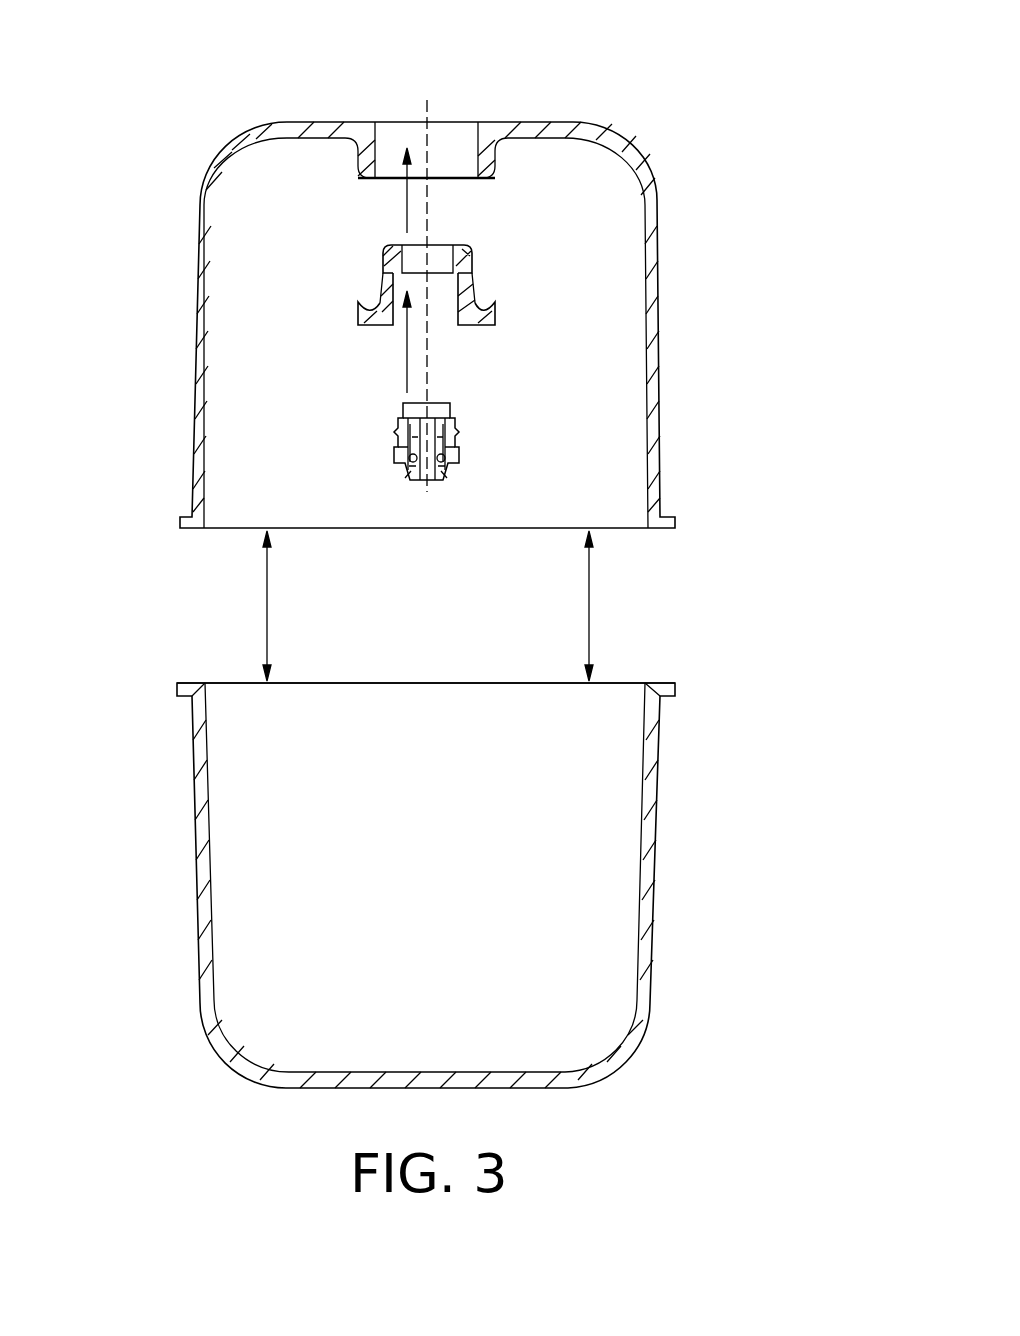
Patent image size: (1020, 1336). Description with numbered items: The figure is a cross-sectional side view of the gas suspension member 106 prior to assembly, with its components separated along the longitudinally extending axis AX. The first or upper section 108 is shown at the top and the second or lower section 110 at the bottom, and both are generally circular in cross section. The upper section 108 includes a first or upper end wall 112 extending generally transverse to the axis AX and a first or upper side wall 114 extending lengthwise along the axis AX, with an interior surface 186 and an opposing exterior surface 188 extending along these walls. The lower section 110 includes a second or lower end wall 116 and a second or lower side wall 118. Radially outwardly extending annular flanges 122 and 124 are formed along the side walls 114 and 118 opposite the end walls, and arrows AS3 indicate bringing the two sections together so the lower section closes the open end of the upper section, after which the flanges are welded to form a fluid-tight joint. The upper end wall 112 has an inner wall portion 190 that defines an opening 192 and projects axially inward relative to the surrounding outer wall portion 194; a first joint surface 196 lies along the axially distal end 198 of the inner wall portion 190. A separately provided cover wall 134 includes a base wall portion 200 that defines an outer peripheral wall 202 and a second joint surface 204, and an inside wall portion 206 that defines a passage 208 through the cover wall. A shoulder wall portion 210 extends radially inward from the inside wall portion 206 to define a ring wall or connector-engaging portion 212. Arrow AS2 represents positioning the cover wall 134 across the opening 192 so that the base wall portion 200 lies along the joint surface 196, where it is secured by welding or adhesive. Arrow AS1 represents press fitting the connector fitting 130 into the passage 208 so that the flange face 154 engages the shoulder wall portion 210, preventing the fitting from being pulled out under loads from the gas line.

The gas suspension member 106 is at (703, 196).
The first or upper section 108 is at (676, 306).
The second or lower section 110 is at (669, 908).
The first or upper end wall 112 is at (318, 128).
The first or upper side wall 114 is at (657, 420).
The second or lower end wall 116 is at (341, 1081).
The second or lower side wall 118 is at (652, 765).
The annular flange 122 is at (668, 530).
The annular flange 124 is at (668, 685).
The connector fitting 130 is at (377, 464).
The cover wall 134 is at (347, 293).
The annular face 154 is at (457, 442).
The interior surface 186 is at (212, 270).
The exterior surface 188 is at (200, 232).
The inner wall portion 190 is at (480, 136).
The opening 192 is at (392, 114).
The outer wall portion 194 is at (500, 110).
The first joint surface 196 is at (363, 175).
The axially-distal extent or end 198 is at (484, 158).
The first or base wall portion 200 is at (485, 318).
The outer peripheral wall 202 is at (387, 320).
The second joint surface 204 is at (484, 303).
The second or inside wall portion 206 is at (466, 290).
The passage 208 is at (396, 333).
The shoulder wall portion 210 is at (450, 277).
The ring wall or connector-engaging portion 212 is at (387, 260).
The arrow AS1 is at (406, 378).
The arrow AS2 is at (405, 186).
The arrows AS3 is at (589, 608).
The axis AX is at (433, 186).